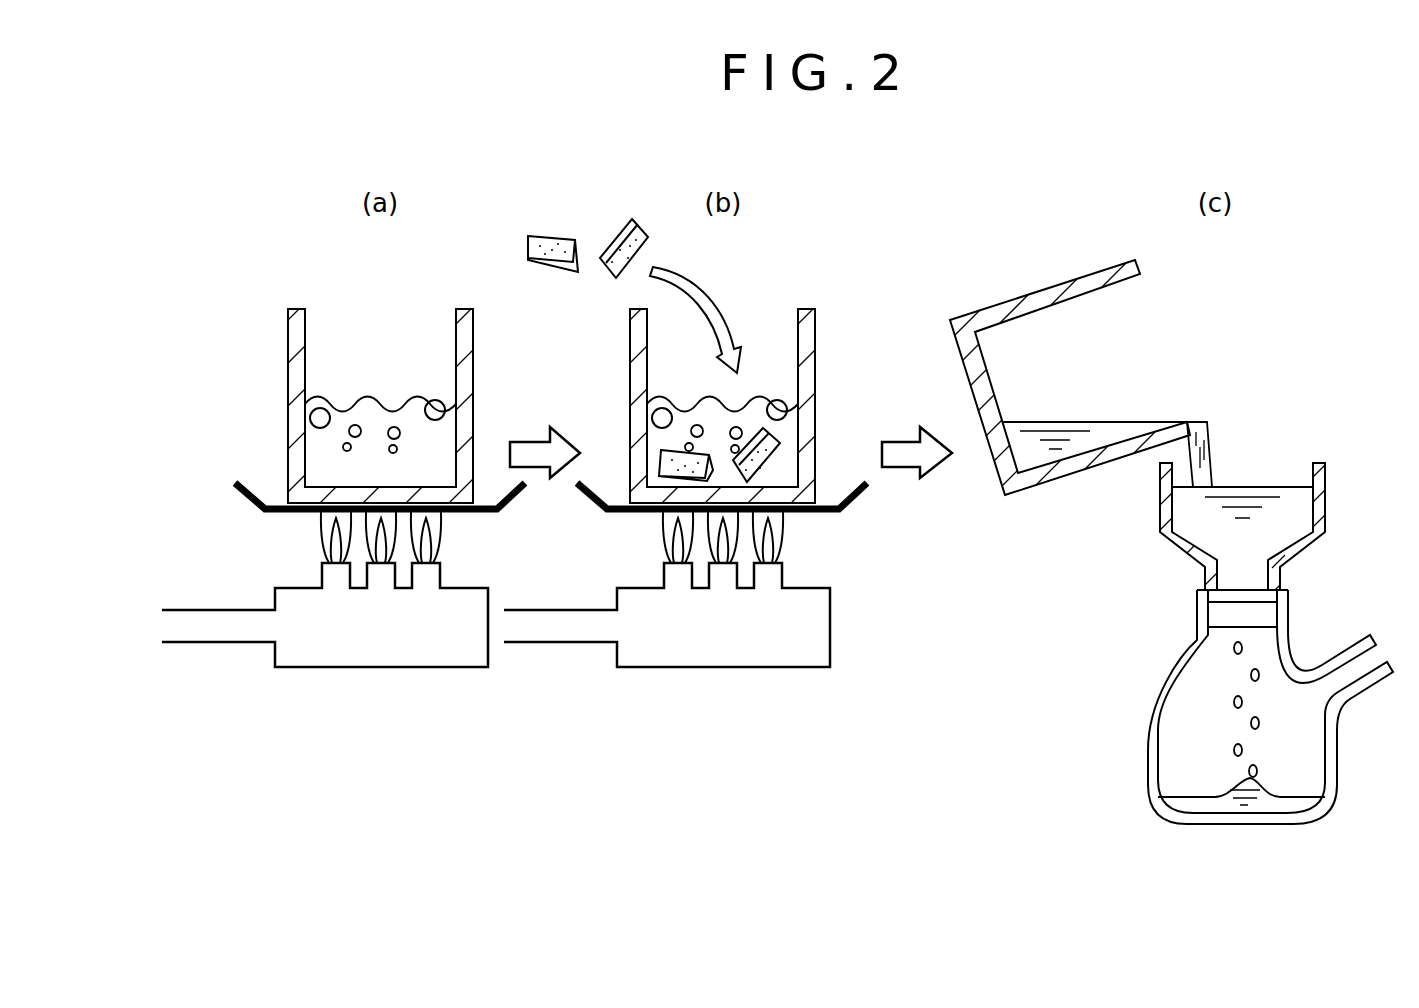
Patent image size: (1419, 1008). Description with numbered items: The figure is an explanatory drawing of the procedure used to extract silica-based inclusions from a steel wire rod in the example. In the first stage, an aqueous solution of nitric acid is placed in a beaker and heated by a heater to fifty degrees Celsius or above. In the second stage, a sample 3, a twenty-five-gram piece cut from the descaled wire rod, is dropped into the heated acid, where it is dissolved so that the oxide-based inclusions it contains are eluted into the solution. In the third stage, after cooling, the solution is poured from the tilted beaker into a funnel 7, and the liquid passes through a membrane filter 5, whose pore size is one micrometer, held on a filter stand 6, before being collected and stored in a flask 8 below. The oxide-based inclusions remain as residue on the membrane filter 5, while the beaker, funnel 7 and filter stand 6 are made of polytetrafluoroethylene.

The sample 3 is at (613, 233).
The membrane filter 5 is at (1216, 596).
The filter stand 6 is at (1214, 613).
The funnel 7 is at (1321, 462).
The flask 8 is at (1149, 712).